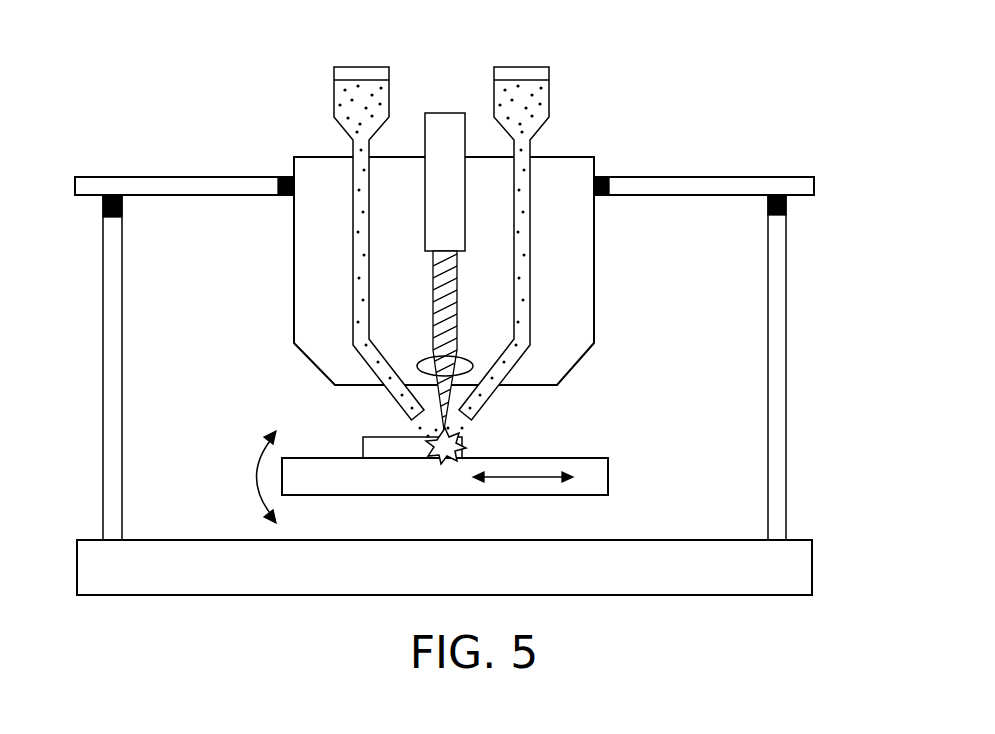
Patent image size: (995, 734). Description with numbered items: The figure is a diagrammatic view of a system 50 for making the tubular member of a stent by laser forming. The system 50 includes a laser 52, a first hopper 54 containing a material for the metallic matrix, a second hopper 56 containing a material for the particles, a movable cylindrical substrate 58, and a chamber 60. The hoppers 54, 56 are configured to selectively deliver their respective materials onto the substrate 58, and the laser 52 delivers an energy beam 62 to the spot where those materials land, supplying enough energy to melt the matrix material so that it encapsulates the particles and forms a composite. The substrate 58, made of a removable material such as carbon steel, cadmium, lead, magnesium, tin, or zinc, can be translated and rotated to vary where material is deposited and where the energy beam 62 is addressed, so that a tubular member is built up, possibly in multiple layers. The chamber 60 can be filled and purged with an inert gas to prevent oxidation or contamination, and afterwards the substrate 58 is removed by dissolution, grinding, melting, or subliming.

The system 50 is at (737, 107).
The laser 52 is at (447, 113).
The first hopper 54 is at (550, 106).
The second hopper 56 is at (337, 107).
The movable cylindrical substrate 58 is at (507, 458).
The chamber 60 is at (781, 427).
The energy beam 62 is at (433, 325).